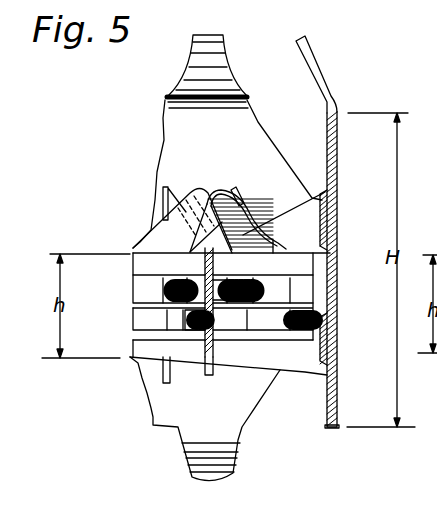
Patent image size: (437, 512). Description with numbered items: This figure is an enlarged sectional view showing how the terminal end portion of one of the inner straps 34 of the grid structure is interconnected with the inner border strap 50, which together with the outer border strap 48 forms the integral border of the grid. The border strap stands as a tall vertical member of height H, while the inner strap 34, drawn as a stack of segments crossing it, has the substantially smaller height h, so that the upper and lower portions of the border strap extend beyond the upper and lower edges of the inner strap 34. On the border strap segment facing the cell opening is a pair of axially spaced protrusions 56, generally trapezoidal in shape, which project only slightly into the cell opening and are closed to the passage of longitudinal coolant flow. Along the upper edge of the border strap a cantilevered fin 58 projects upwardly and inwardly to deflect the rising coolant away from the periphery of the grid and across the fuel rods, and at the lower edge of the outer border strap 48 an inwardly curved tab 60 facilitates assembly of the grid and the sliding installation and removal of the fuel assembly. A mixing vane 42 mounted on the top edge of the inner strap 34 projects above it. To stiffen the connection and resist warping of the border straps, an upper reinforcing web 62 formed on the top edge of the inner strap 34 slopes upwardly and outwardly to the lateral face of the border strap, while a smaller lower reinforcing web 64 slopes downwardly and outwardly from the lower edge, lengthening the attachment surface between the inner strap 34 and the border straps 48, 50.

The inner straps 34 is at (223, 302).
The mixing vane 42 is at (200, 187).
The outer border strap 48 is at (230, 289).
The inner border strap 50 is at (335, 134).
The protrusions 56 is at (334, 210).
The cantilevered fins 58 is at (213, 37).
The inwardly curved tabs 60 is at (238, 447).
The upper reinforcing web 62 is at (268, 223).
The lower reinforcing web 64 is at (228, 345).